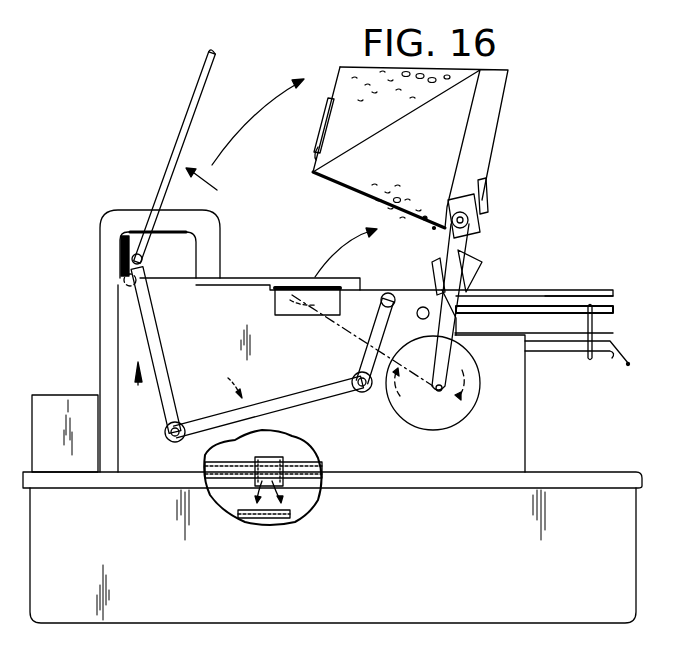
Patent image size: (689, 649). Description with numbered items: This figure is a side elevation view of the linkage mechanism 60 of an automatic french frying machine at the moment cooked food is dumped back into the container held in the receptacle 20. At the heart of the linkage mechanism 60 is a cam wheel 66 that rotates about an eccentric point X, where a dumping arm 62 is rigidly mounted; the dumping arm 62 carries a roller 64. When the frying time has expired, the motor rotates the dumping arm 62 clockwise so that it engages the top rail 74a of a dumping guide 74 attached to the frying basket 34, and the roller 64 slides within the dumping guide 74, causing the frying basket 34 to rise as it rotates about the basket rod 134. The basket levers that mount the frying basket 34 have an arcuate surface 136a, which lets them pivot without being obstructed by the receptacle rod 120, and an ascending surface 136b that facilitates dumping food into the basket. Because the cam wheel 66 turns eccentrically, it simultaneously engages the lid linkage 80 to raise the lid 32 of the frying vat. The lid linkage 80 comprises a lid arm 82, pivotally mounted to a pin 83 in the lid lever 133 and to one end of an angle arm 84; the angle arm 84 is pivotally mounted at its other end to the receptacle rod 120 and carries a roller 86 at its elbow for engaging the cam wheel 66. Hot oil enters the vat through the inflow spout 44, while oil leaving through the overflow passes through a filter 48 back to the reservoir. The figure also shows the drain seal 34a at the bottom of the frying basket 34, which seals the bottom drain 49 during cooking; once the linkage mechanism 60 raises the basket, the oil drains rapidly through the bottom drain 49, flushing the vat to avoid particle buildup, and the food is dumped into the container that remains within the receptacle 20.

The receptacle 20 is at (617, 360).
The lid 32 is at (196, 98).
The frying basket 34 is at (512, 76).
The drain seal 34a is at (313, 150).
The inflow spout 44 is at (141, 224).
The filter 48 is at (250, 520).
The bottom drain 49 is at (284, 484).
The linkage mechanism 60 is at (443, 401).
The dumping arm 62 is at (466, 352).
The roller 64 is at (471, 226).
The cam wheel 66 is at (460, 412).
The dumping guide 74 is at (478, 210).
The top rail 74a is at (480, 190).
The lid linkage 80 is at (188, 380).
The lid arm 82 is at (158, 338).
The pin 83 is at (131, 261).
The angle arm 84 is at (313, 382).
The roller 86 is at (362, 393).
The receptacle rod 120 is at (388, 292).
The lid lever 133 is at (125, 244).
The basket rod 134 is at (423, 306).
The arcuate surface 136a is at (470, 247).
The ascending surface 136b is at (476, 276).